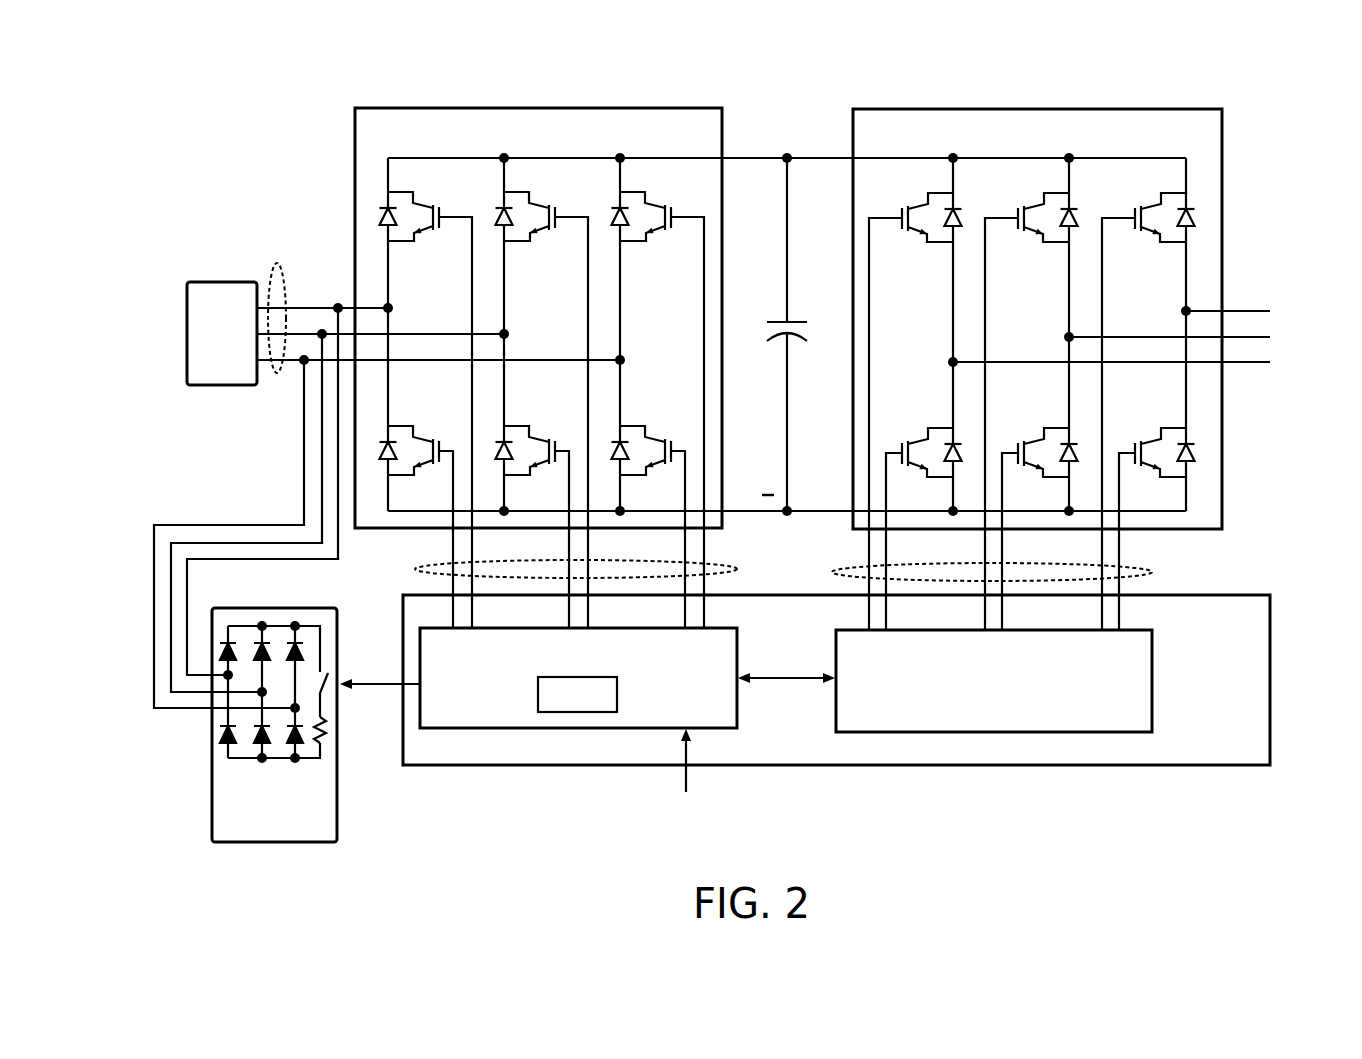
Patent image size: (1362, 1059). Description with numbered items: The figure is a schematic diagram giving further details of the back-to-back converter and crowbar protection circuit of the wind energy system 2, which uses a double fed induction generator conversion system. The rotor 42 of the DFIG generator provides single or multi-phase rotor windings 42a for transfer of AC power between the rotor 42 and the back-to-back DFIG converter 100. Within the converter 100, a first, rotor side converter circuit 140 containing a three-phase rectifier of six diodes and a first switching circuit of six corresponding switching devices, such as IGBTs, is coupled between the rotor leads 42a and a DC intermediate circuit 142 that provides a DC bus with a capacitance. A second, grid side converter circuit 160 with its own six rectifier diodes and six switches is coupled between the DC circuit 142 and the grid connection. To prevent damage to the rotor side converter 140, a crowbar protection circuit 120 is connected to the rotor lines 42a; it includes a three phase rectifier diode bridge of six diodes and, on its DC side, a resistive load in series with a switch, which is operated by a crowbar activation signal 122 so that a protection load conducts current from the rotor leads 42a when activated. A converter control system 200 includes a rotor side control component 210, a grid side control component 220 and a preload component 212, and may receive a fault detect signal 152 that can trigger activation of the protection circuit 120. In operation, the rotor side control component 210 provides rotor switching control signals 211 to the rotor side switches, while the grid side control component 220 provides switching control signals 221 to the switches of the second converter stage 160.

The wind energy system 2 is at (180, 75).
The rotor 42 is at (218, 281).
The rotor windings 42a is at (274, 265).
The DFIG converter 100 is at (318, 206).
The crowbar protection circuit 120 is at (212, 805).
The crowbar activation signal 122 is at (390, 684).
The rotor side converter circuit 140 is at (355, 131).
The DC intermediate circuit 142 is at (786, 118).
The fault detect signal 152 is at (686, 783).
The grid side converter circuit 160 is at (1222, 138).
The converter control system 200 is at (1270, 727).
The rotor side control component 210 is at (508, 628).
The rotor switching control signals 211 is at (415, 570).
The preload component 212 is at (538, 693).
The grid side control component 220 is at (1152, 654).
The switching control signals 221 is at (833, 573).